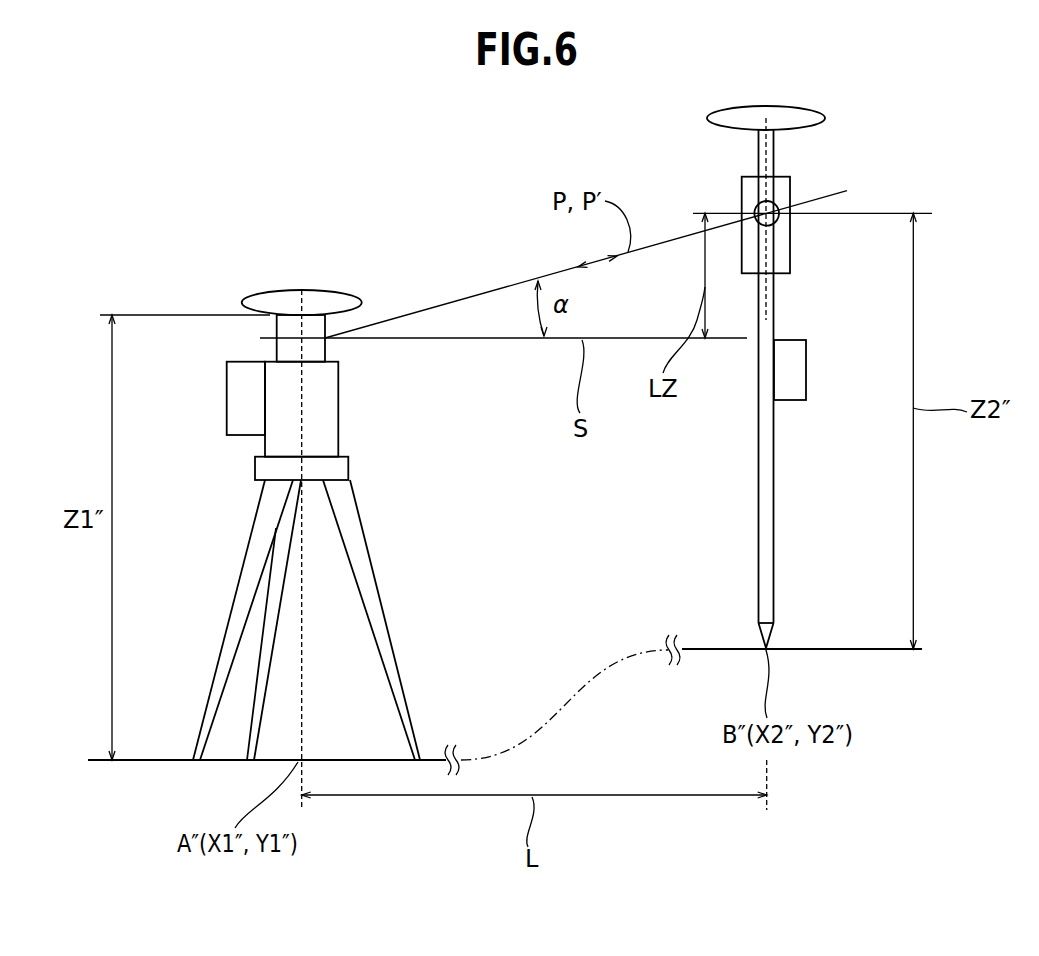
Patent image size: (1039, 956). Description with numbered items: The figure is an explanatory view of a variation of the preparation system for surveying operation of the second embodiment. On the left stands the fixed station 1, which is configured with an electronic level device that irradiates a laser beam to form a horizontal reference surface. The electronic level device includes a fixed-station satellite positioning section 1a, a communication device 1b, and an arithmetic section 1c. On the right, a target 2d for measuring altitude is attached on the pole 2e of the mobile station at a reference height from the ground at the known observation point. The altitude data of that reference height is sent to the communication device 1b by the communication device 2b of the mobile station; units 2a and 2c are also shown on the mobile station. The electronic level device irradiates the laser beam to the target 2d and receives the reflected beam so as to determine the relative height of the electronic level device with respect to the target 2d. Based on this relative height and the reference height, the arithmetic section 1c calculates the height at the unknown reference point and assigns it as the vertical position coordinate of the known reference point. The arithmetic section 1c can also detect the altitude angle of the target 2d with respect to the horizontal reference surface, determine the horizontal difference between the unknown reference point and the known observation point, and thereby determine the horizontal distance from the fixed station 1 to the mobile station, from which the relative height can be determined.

The fixed station 1 is at (347, 402).
The fixed-station satellite positioning section 1a is at (322, 290).
The communication device 1b is at (199, 398).
The arithmetic section 1c is at (245, 398).
The GNSS antenna of pole 2a is at (811, 105).
The communication device 2b is at (839, 358).
The communication unit 2c is at (807, 372).
The target 2d is at (753, 210).
The pole 2e is at (774, 495).